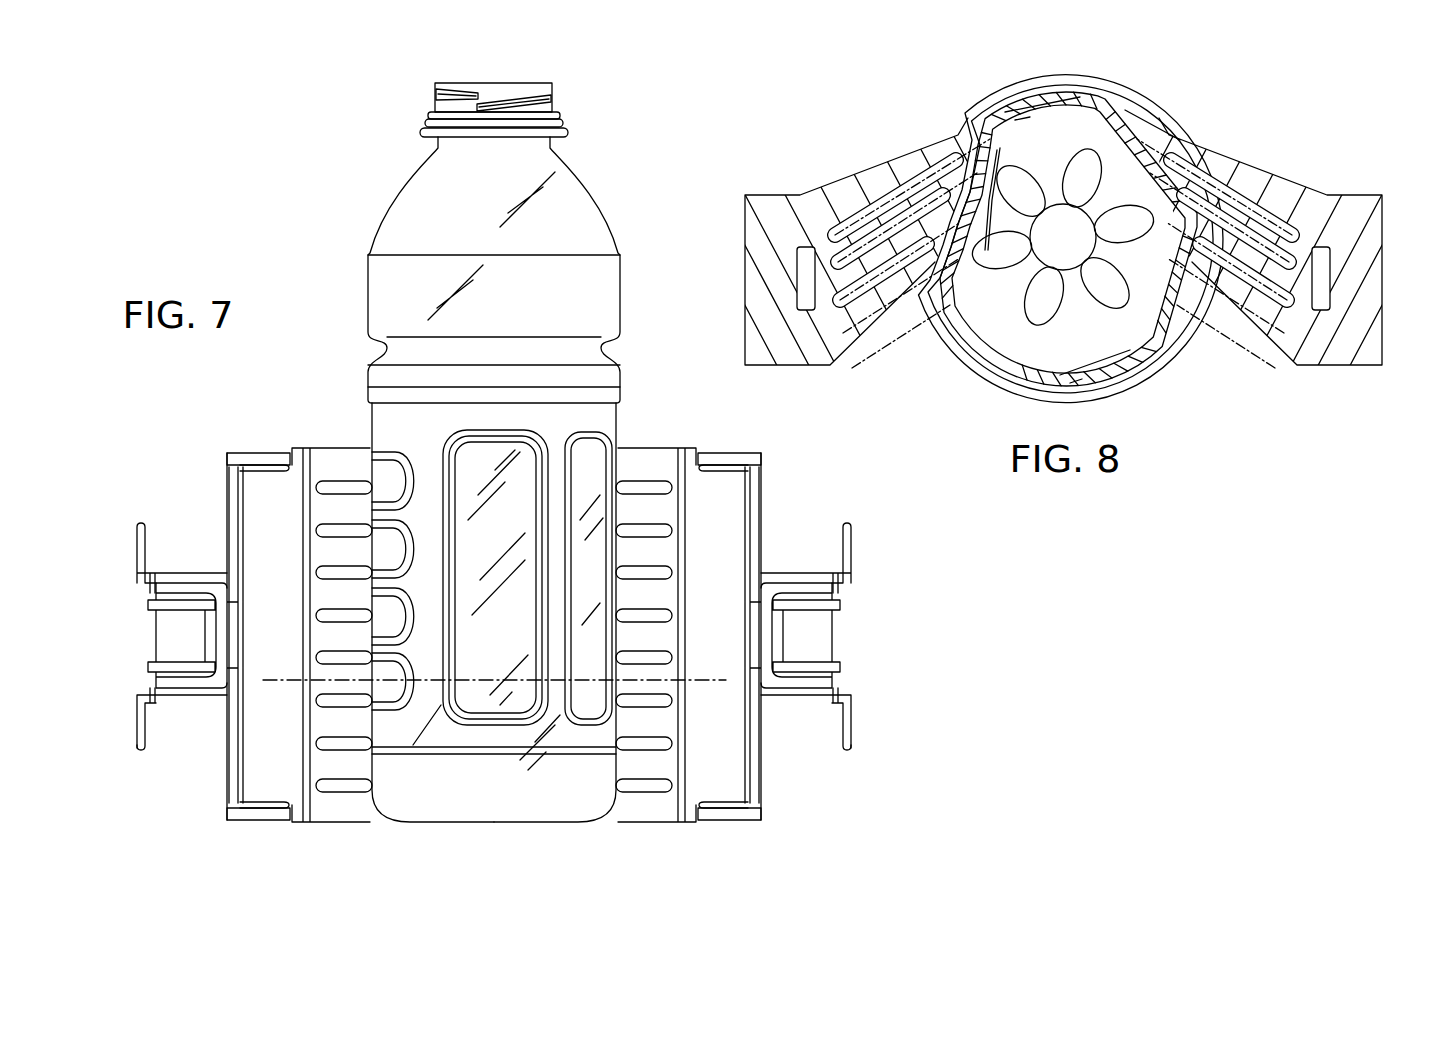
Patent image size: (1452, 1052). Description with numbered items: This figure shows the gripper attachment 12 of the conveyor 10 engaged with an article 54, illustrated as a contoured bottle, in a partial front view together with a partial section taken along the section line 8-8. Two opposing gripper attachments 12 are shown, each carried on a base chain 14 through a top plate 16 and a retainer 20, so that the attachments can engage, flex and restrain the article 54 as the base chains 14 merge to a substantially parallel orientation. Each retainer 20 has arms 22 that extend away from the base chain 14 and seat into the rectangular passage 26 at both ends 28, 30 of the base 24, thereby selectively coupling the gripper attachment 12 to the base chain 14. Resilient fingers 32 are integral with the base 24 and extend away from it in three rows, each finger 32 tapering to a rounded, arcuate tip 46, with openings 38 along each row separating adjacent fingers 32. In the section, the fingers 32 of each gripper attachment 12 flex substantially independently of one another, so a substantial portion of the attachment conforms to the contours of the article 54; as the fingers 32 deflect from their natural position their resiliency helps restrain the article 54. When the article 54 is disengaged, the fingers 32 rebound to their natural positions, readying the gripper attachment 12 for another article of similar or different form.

In FIG. 7, the section line 8- 8 is at (263, 680).
In FIG. 7, the conveyor 10 is at (136, 758).
In FIG. 7, the gripper attachment 12 is at (333, 828).
In FIG. 8, the gripper attachment 12 is at (772, 192).
In FIG. 7, the base chain 14 is at (154, 636).
In FIG. 7, the top plate 16 is at (188, 570).
In FIG. 7, the retainer 20 is at (226, 490).
In FIG. 7, the arms 22 is at (250, 450).
In FIG. 7, the base 24 is at (260, 562).
In FIG. 8, the base 24 is at (743, 230).
In FIG. 8, the rectangular passage 26 is at (800, 293).
In FIG. 7, the end of the base 28 is at (263, 806).
In FIG. 7, the end of the base 30 is at (253, 472).
In FIG. 7, the resilient fingers 32 is at (337, 445).
In FIG. 8, the resilient fingers 32 is at (893, 160).
In FIG. 7, the openings 38 is at (333, 493).
In FIG. 8, the tip 46 is at (972, 150).
In FIG. 7, the article 54 is at (462, 80).
In FIG. 8, the article 54 is at (985, 98).